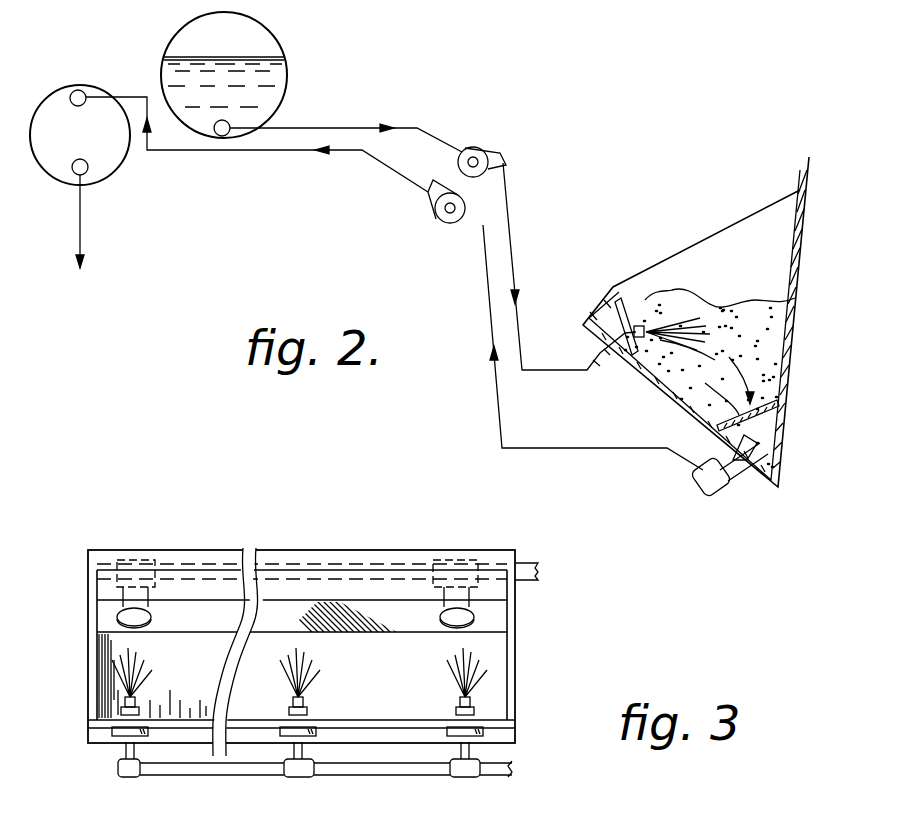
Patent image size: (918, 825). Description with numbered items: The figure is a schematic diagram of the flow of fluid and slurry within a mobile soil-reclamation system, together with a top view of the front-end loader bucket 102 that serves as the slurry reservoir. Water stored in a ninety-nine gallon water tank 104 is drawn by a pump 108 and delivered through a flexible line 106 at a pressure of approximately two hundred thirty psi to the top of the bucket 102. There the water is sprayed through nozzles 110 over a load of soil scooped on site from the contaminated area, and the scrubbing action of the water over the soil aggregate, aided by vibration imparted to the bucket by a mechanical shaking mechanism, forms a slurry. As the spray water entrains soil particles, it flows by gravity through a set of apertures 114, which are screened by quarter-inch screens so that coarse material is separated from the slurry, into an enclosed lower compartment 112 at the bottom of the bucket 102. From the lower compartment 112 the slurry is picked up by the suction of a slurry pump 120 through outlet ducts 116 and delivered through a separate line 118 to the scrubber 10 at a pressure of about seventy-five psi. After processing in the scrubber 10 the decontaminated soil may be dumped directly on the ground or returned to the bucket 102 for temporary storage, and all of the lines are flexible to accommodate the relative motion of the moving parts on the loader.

In FIG. 2, the scrubber 10 is at (90, 83).
In FIG. 2, the loading bucket 102 is at (797, 258).
In FIG. 3, the loading bucket 102 is at (359, 543).
In FIG. 2, the water tank 104 is at (285, 45).
In FIG. 2, the flexible line 106 is at (511, 239).
In FIG. 3, the flexible line 106 is at (488, 779).
In FIG. 2, the pump 108 is at (490, 148).
In FIG. 2, the nozzles 110 is at (654, 307).
In FIG. 3, the nozzles 110 is at (140, 698).
In FIG. 2, the lower compartment 112 is at (764, 430).
In FIG. 3, the apertures 114 is at (117, 617).
In FIG. 2, the outlet ducts 116 is at (736, 473).
In FIG. 3, the outlet ducts 116 is at (150, 556).
In FIG. 2, the separate line 118 is at (537, 446).
In FIG. 3, the separate line 118 is at (517, 563).
In FIG. 2, the slurry pump 120 is at (448, 222).